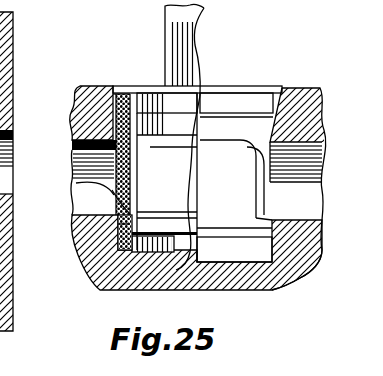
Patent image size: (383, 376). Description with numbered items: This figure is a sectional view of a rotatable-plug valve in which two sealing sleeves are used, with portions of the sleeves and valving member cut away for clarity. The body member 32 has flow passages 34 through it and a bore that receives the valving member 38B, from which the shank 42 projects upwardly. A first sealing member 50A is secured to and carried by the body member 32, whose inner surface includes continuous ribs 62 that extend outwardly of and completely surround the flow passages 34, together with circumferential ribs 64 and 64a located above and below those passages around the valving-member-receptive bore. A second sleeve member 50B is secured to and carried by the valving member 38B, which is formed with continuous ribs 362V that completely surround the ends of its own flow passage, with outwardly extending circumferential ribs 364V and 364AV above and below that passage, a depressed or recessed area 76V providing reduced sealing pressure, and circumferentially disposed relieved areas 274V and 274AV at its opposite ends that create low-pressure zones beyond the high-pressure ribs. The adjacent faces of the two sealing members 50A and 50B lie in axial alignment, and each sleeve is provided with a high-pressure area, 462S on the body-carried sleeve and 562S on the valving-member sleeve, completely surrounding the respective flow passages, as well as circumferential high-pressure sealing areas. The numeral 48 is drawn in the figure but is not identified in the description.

The shank 42 is at (167, 31).
The undercut or relieved area 274V is at (142, 104).
The outwardly projecting rib 364V is at (200, 113).
The body member 32 is at (83, 87).
The continuous ribs 62 is at (78, 125).
The flow passages 34 is at (0, 186).
The valving member 38B is at (167, 177).
The continuous outwardly projecting rib 64 is at (224, 126).
The sealing member 50A is at (122, 186).
The sleeve member 50B is at (164, 207).
The recessed area 76V is at (198, 191).
The continuous ribs 362V is at (116, 201).
The high pressure area 462S is at (118, 224).
The continuous outwardly projecting rib 64a is at (243, 230).
The undercut or relieved area 274AV is at (122, 270).
The high pressure area 562S is at (110, 190).
The outwardly projecting rib 364AV is at (208, 238).
The insert 48 is at (124, 221).